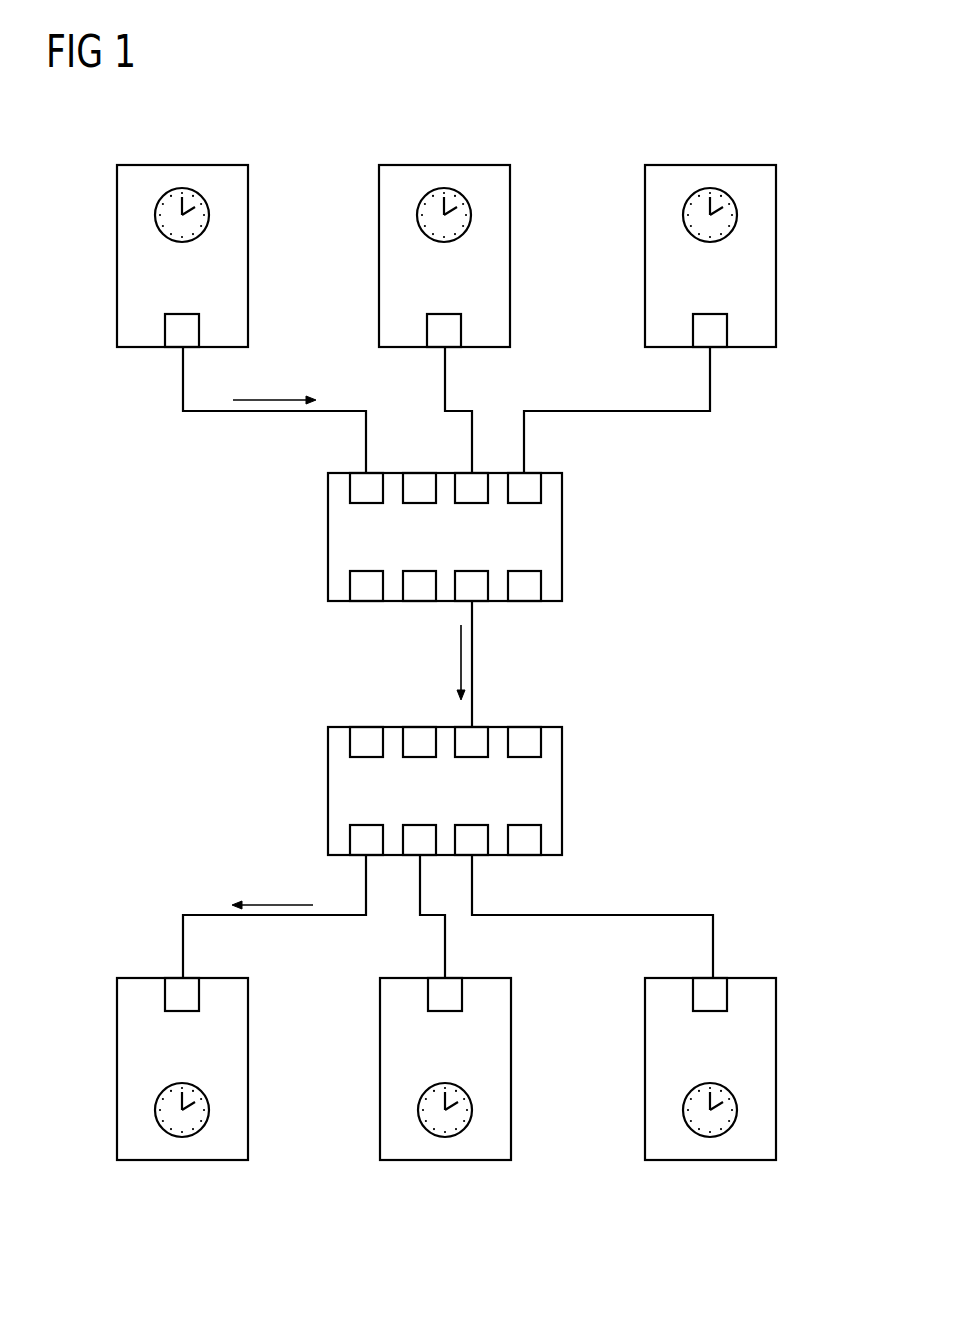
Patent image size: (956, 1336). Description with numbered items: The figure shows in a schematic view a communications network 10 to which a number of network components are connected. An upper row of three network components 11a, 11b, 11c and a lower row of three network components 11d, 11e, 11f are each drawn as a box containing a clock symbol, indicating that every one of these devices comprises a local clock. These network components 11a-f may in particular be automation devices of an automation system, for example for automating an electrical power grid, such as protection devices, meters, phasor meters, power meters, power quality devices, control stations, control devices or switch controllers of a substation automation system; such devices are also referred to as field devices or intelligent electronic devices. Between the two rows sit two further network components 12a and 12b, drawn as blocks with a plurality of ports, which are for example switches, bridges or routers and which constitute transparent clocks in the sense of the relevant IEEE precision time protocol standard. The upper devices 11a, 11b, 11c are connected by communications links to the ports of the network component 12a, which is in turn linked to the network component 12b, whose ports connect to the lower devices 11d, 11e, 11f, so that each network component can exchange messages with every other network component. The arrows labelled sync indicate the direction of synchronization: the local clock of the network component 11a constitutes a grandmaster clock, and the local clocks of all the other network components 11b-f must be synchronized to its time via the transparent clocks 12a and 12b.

The communications network 10 is at (762, 597).
The network component 11a is at (206, 165).
The network component 11b is at (474, 165).
The network component 11c is at (729, 165).
The network component 11d is at (205, 1160).
The network component 11e is at (462, 1160).
The network component 11f is at (731, 1160).
The network component 12a is at (562, 545).
The network component 12b is at (562, 796).